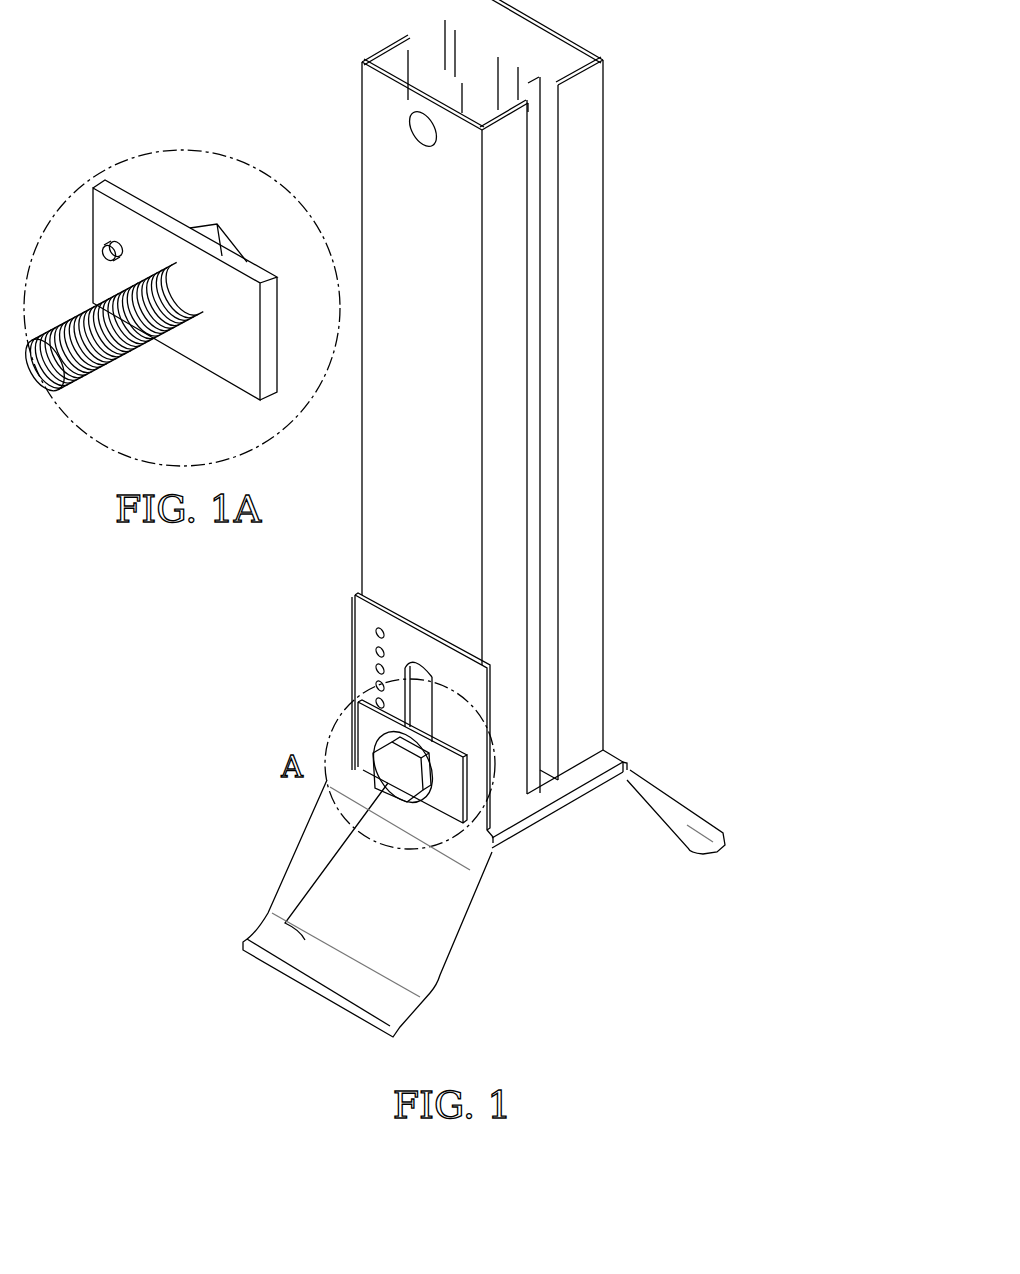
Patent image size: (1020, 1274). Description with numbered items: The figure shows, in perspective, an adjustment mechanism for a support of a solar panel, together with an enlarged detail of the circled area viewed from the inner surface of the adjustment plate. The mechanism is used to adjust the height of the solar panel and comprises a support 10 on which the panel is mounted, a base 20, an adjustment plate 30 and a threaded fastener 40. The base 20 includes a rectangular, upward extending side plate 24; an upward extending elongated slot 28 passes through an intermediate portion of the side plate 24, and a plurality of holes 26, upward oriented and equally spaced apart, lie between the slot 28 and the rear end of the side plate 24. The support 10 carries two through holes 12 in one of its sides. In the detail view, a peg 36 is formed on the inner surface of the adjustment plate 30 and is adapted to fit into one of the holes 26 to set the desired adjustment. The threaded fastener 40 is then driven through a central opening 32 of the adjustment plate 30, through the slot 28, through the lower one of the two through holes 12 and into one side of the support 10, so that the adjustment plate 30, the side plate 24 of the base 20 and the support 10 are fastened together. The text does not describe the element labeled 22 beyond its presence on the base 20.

In FIG. 1, the support 10 is at (614, 301).
In FIG. 1, the through holes 12 is at (432, 147).
In FIG. 1, the base 20 is at (737, 835).
In FIG. 1, the leg 22 is at (678, 813).
In FIG. 1, the side plate 24 is at (370, 625).
In FIG. 1, the holes 26 is at (377, 671).
In FIG. 1, the elongated slot 28 is at (382, 655).
In FIG. 1A, the adjustment plate 30 is at (223, 253).
In FIG. 1, the adjustment plate 30 is at (572, 922).
In FIG. 1A, the central opening 32 is at (203, 318).
In FIG. 1, the central opening 32 is at (478, 822).
In FIG. 1A, the peg 36 is at (105, 242).
In FIG. 1A, the threaded fastener 40 is at (75, 323).
In FIG. 1, the threaded fastener 40 is at (245, 953).